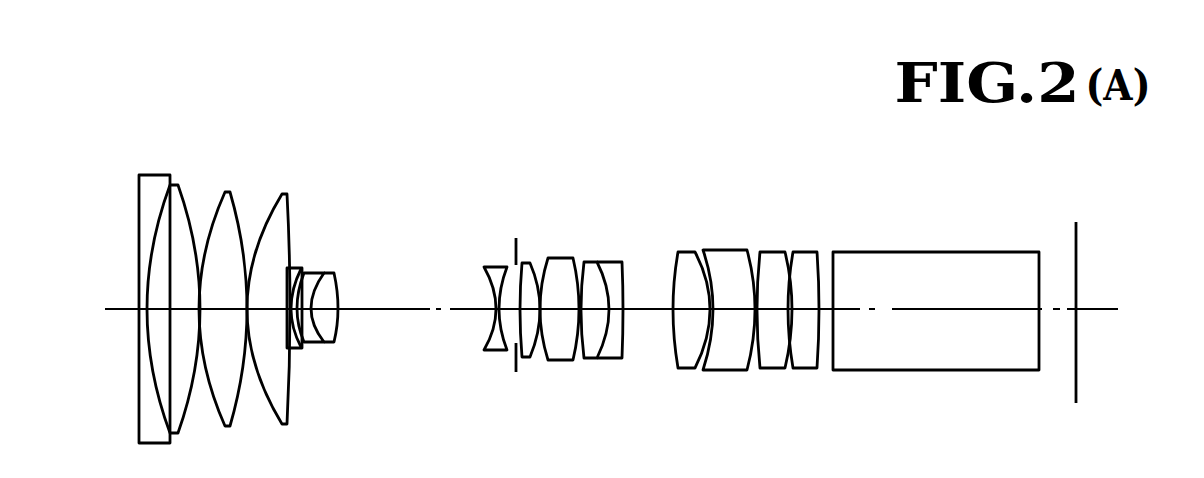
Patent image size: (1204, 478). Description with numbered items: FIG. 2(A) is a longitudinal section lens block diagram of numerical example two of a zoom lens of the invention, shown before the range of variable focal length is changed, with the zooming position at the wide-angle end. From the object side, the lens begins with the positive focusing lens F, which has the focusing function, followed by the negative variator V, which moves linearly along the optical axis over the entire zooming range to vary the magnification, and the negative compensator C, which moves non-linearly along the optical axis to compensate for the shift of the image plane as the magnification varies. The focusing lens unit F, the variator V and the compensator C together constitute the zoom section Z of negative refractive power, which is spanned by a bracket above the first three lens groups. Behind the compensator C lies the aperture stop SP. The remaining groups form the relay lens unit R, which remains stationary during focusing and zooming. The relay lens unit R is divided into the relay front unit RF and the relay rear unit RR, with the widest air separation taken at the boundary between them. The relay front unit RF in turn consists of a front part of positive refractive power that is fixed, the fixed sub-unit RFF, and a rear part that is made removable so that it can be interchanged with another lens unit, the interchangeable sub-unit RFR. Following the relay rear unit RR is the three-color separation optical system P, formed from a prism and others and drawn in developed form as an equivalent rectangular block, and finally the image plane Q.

The zoom section Z is at (110, 115).
The positive focusing lens F is at (315, 168).
The negative variator V is at (342, 258).
The negative compensator C is at (512, 255).
The aperture stop SP is at (516, 370).
The relay lens unit R is at (525, 115).
The relay front unit RF is at (527, 172).
The fixed sub-unit RFF is at (522, 255).
The interchangeable sub-unit RFR is at (583, 255).
The relay rear unit RR is at (665, 237).
The three-color separation optical system P is at (992, 251).
The image plane Q is at (1072, 235).